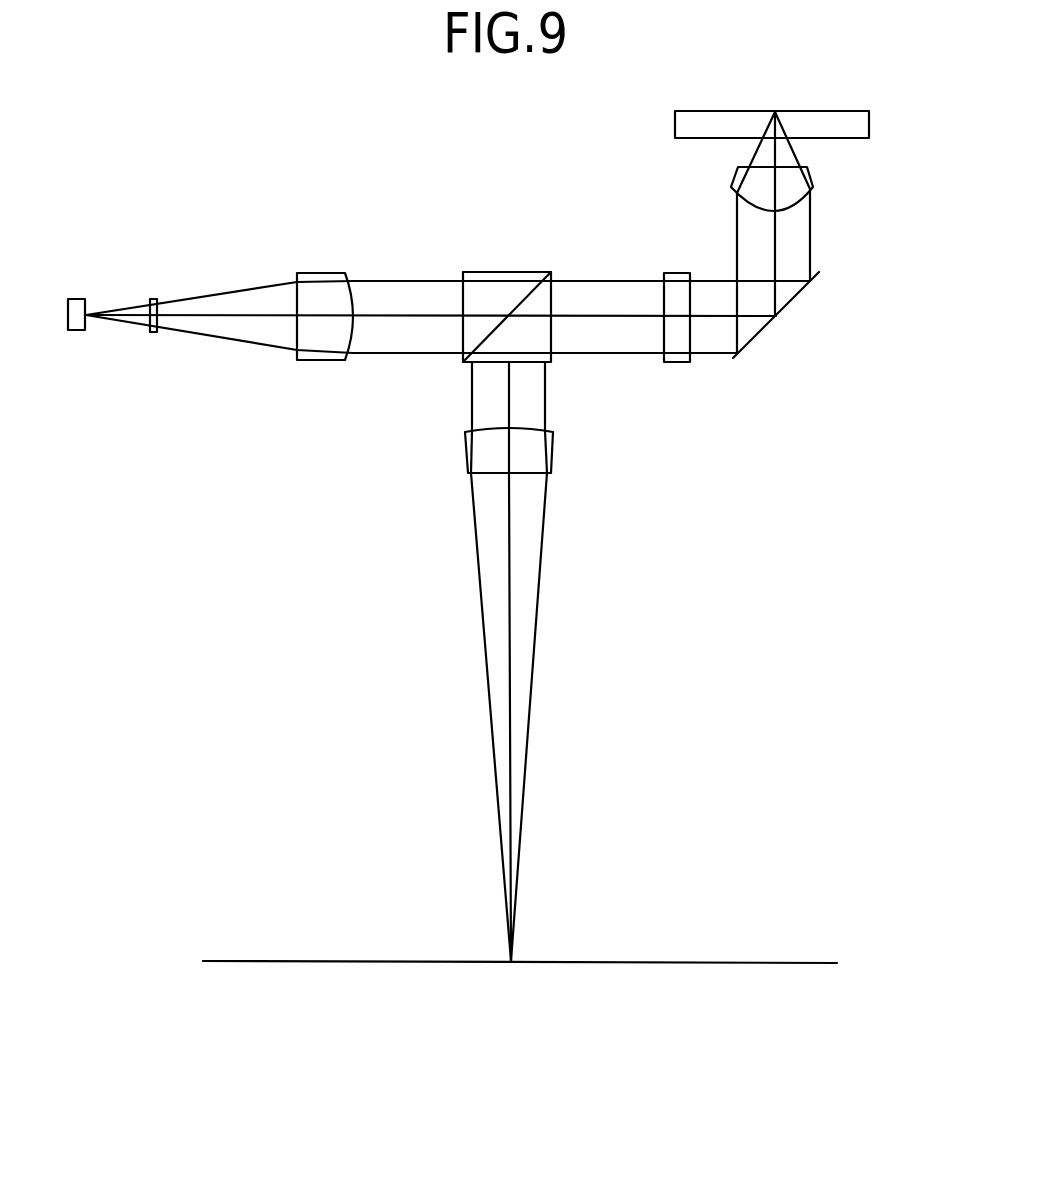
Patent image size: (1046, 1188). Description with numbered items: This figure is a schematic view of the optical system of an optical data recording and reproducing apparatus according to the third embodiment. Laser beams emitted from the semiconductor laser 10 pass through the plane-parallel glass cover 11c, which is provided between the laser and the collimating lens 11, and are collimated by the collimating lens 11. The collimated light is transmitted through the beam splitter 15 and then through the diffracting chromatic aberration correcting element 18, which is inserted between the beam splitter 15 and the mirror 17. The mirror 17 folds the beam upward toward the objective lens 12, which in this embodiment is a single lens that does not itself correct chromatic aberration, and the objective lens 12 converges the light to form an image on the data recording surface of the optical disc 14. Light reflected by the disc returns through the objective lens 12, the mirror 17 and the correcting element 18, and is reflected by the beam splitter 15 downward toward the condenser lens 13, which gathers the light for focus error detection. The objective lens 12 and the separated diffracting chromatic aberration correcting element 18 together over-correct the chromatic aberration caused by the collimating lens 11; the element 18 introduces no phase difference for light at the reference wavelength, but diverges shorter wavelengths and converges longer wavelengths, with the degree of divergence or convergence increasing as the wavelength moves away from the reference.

The semiconductor laser 10 is at (74, 306).
The plane-parallel glass cover 11c is at (157, 333).
The collimating lens 11 is at (323, 353).
The beam splitter 15 is at (523, 277).
The diffracting chromatic aberration correcting element 18 is at (680, 358).
The mirror 17 is at (797, 298).
The objective lens 12 is at (792, 185).
The optical disc 14 is at (858, 122).
The condenser lens 13 is at (553, 455).